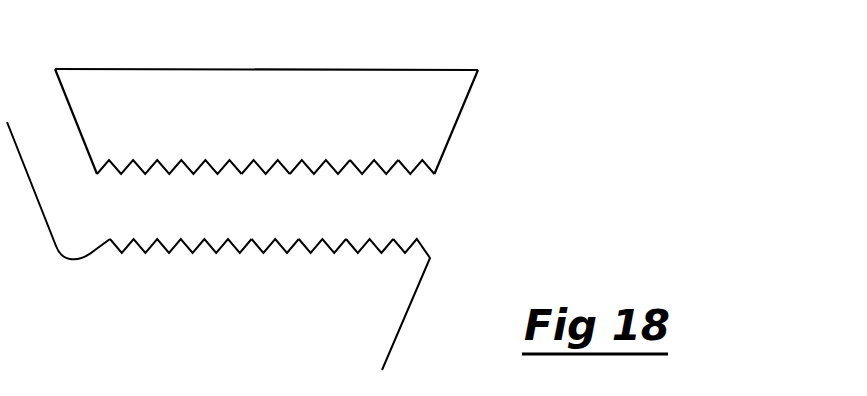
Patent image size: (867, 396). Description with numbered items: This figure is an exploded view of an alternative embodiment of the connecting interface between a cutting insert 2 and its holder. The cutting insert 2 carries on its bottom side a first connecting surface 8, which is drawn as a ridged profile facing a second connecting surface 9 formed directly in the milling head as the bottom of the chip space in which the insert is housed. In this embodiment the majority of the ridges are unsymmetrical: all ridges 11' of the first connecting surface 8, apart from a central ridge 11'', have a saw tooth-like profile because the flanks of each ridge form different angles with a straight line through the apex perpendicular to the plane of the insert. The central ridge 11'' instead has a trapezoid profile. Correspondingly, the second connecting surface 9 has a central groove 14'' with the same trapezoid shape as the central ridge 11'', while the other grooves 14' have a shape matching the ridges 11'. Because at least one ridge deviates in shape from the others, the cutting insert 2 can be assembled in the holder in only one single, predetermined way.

The cutting insert 2 is at (285, 70).
The first connecting surface 8 is at (440, 180).
The second connecting surface 9 is at (120, 223).
The ridges 11' is at (368, 185).
The central ridge 11'' is at (279, 193).
The grooves 14' is at (391, 228).
The central groove 14'' is at (284, 276).